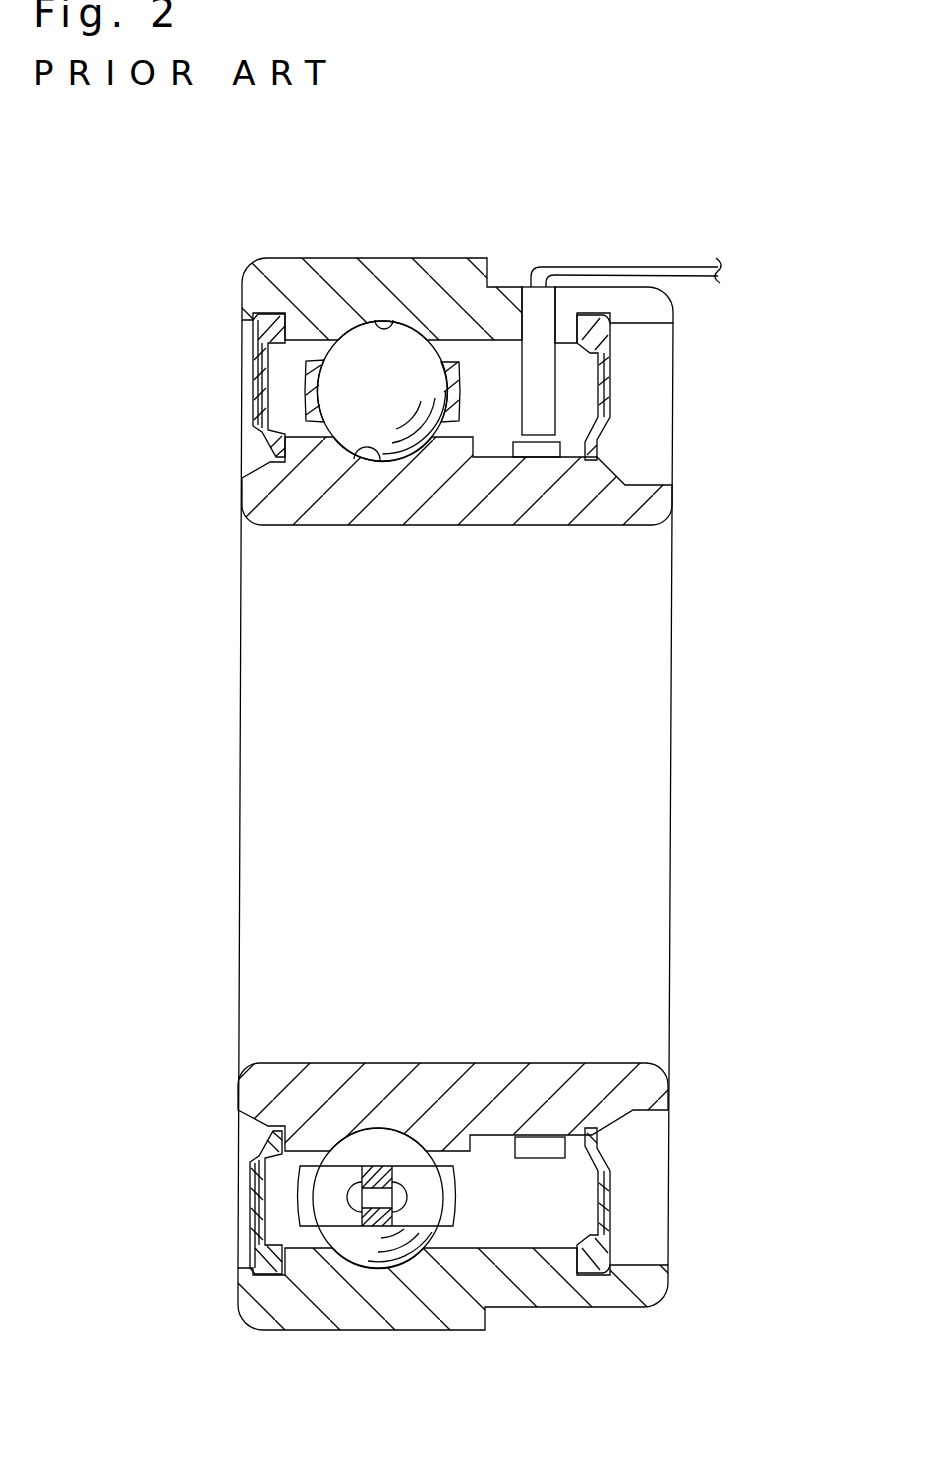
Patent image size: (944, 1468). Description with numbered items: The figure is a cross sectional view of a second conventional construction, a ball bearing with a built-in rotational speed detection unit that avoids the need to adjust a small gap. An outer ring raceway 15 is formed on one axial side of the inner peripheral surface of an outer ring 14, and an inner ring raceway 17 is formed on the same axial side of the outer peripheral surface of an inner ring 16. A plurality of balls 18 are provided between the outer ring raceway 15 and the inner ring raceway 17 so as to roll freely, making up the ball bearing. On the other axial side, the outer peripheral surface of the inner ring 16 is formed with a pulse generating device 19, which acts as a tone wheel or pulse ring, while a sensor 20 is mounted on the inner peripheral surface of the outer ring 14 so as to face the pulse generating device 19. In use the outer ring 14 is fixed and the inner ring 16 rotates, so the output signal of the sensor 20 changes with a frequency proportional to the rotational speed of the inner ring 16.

The outer ring 14 is at (472, 278).
The outer ring raceway 15 is at (384, 322).
The inner ring 16 is at (480, 522).
The inner ring raceway 17 is at (352, 458).
The balls 18 is at (327, 389).
The pulse generating device 19 is at (557, 448).
The sensor 20 is at (545, 382).